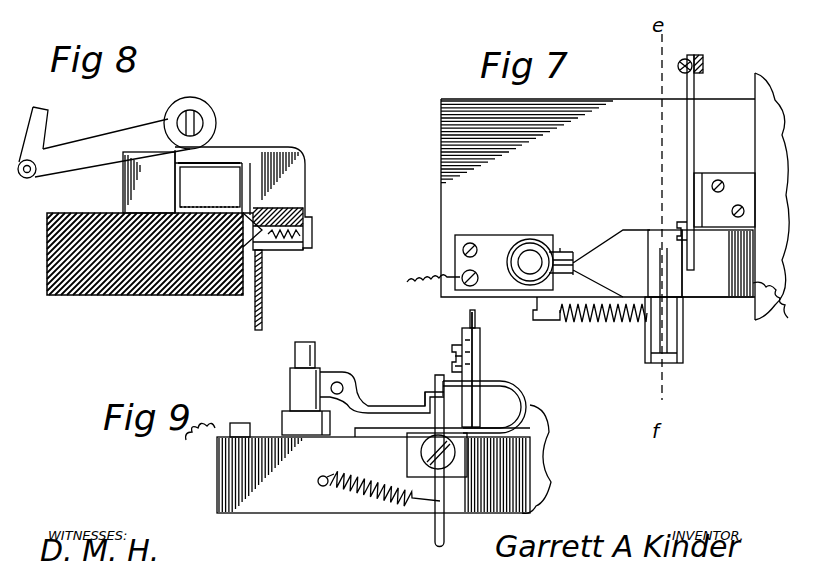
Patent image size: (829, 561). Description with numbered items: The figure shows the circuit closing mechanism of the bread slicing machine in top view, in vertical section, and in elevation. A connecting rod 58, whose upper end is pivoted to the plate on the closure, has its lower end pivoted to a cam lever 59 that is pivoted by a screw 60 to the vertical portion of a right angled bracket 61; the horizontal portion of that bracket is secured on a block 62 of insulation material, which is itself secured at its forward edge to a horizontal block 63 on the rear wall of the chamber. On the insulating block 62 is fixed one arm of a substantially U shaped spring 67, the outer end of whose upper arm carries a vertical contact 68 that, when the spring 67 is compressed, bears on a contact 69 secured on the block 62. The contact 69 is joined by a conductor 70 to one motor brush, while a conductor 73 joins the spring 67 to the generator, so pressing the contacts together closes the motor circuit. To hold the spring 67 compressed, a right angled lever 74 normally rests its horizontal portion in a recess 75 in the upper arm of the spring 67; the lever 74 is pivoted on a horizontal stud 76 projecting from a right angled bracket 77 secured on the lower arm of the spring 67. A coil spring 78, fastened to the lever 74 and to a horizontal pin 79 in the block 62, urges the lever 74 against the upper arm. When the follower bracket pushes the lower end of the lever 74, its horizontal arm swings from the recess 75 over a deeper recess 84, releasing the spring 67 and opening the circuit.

In FIG. 8, the connecting rod 58 is at (47, 125).
In FIG. 7, the connecting rod 58 is at (704, 65).
In FIG. 9, the connecting rod 58 is at (477, 320).
In FIG. 8, the cam lever 59 is at (82, 150).
In FIG. 7, the cam lever 59 is at (696, 113).
In FIG. 9, the cam lever 59 is at (467, 325).
In FIG. 8, the screw 60 is at (190, 110).
In FIG. 7, the screw 60 is at (680, 222).
In FIG. 9, the screw 60 is at (450, 352).
In FIG. 8, the right angled bracket 61 is at (123, 186).
In FIG. 7, the right angled bracket 61 is at (703, 175).
In FIG. 9, the right angled bracket 61 is at (481, 350).
In FIG. 8, the block of insulation material 62 is at (101, 296).
In FIG. 7, the block of insulation material 62 is at (598, 198).
In FIG. 9, the block of insulation material 62 is at (520, 452).
In FIG. 7, the horizontal block 63 is at (772, 196).
In FIG. 9, the horizontal block 63 is at (552, 436).
In FIG. 8, the U shaped spring 67 is at (180, 190).
In FIG. 7, the U shaped spring 67 is at (736, 282).
In FIG. 9, the U shaped spring 67 is at (523, 397).
In FIG. 7, the vertical contact 68 is at (530, 258).
In FIG. 9, the vertical contact 68 is at (294, 358).
In FIG. 7, the contact 69 is at (511, 256).
In FIG. 9, the contact 69 is at (286, 414).
In FIG. 7, the conductor 70 is at (433, 268).
In FIG. 9, the conductor 70 is at (200, 447).
In FIG. 7, the conductor 73 is at (772, 316).
In FIG. 8, the right angled lever 74 is at (278, 147).
In FIG. 9, the right angled lever 74 is at (440, 390).
In FIG. 8, the recess 75 is at (178, 163).
In FIG. 9, the recess 75 is at (412, 399).
In FIG. 8, the horizontal stud 76 is at (266, 250).
In FIG. 8, the right angled bracket 77 is at (226, 208).
In FIG. 9, the right angled bracket 77 is at (410, 456).
In FIG. 9, the coil spring 78 is at (379, 509).
In FIG. 9, the horizontal pin 79 is at (329, 477).
In FIG. 9, the deeper recess 84 is at (380, 403).